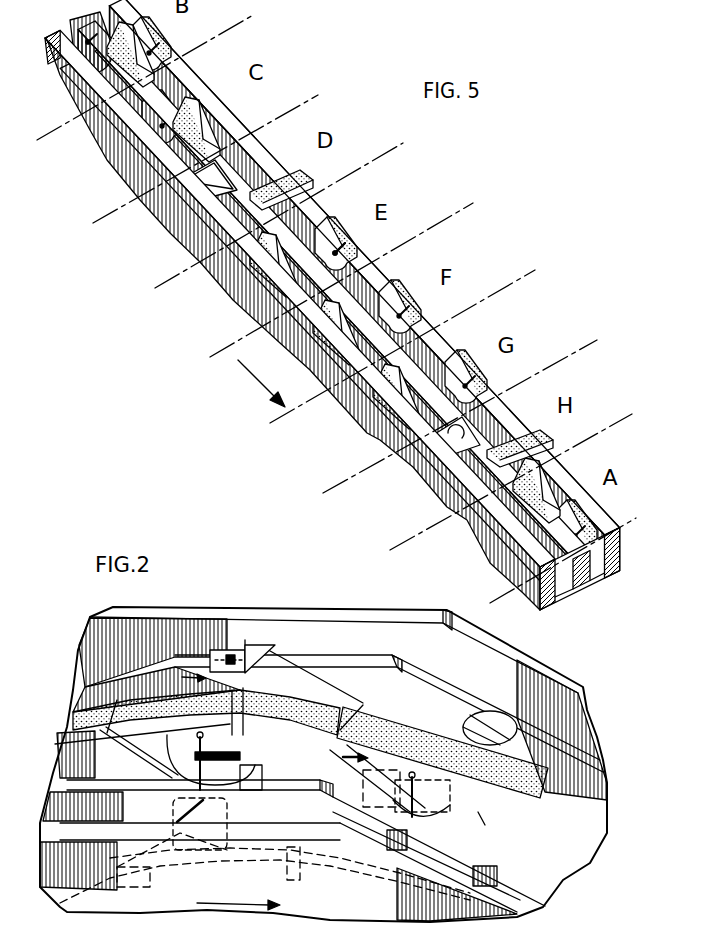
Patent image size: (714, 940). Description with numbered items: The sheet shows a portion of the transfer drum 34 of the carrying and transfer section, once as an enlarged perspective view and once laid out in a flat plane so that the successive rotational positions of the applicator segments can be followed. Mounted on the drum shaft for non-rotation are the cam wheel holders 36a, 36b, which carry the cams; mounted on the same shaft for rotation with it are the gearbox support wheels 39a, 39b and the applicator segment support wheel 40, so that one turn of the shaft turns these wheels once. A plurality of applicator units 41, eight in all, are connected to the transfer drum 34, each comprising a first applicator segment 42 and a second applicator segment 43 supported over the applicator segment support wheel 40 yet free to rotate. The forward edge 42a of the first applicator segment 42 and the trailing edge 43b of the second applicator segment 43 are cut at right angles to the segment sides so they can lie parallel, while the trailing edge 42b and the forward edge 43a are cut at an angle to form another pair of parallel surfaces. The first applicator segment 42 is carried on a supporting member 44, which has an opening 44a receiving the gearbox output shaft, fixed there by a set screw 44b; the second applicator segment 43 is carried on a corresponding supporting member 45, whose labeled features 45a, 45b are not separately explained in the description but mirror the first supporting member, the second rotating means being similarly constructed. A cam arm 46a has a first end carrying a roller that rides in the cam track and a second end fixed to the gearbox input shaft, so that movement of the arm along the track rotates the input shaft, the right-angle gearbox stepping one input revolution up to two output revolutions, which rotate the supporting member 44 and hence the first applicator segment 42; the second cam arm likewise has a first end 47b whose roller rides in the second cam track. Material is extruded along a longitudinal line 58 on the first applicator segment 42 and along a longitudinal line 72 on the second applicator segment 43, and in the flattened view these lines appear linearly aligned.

In FIG. 2, the transfer drum 34 is at (269, 590).
In FIG. 2, the cam wheel holder 36a is at (287, 833).
In FIG. 2, the cam wheel holder 36b is at (371, 614).
In FIG. 5, the gearbox support wheel 39a is at (212, 213).
In FIG. 2, the gearbox support wheel 39a is at (301, 789).
In FIG. 5, the gearbox support wheel 39b is at (267, 158).
In FIG. 2, the gearbox support wheel 39b is at (380, 662).
In FIG. 5, the applicator segment support wheel 40 is at (305, 213).
In FIG. 2, the applicator segment support wheel 40 is at (511, 862).
In FIG. 2, the applicator unit 41 is at (334, 753).
In FIG. 5, the first applicator segment 42 is at (277, 270).
In FIG. 2, the first applicator segment 42 is at (170, 710).
In FIG. 2, the forward edge 42a is at (226, 700).
In FIG. 2, the trailing edge 42b is at (117, 700).
In FIG. 5, the second applicator segment 43 is at (343, 233).
In FIG. 2, the second applicator segment 43 is at (312, 702).
In FIG. 2, the forward edge 43a is at (338, 714).
In FIG. 2, the trailing edge 43b is at (240, 703).
In FIG. 2, the supporting member 44 is at (160, 757).
In FIG. 2, the opening 44a is at (240, 755).
In FIG. 2, the set screw 44b is at (261, 773).
In FIG. 5, the supporting member 45 is at (346, 257).
In FIG. 2, the supporting member 45 is at (261, 652).
In FIG. 2, the cam member lug 45a is at (270, 657).
In FIG. 2, the cam member stop 45b is at (240, 654).
In FIG. 2, the cam arm 46a is at (175, 808).
In FIG. 2, the first end 47b is at (445, 800).
In FIG. 5, the longitudinal line 58 is at (178, 99).
In FIG. 5, the longitudinal line 72 is at (217, 132).